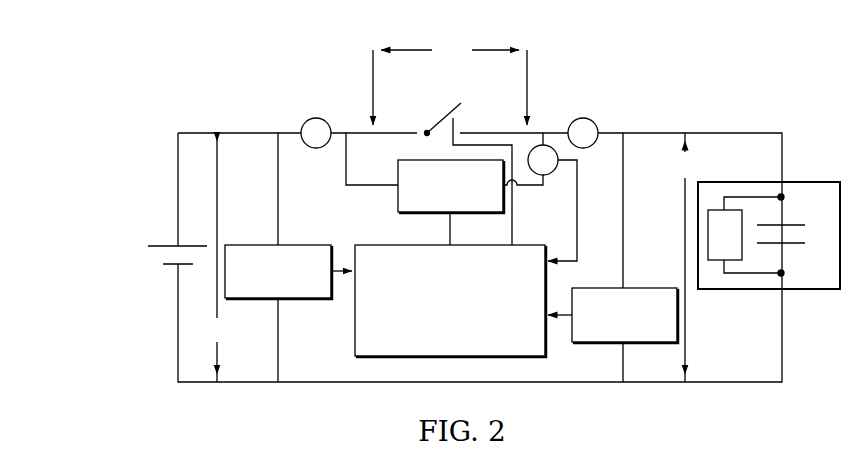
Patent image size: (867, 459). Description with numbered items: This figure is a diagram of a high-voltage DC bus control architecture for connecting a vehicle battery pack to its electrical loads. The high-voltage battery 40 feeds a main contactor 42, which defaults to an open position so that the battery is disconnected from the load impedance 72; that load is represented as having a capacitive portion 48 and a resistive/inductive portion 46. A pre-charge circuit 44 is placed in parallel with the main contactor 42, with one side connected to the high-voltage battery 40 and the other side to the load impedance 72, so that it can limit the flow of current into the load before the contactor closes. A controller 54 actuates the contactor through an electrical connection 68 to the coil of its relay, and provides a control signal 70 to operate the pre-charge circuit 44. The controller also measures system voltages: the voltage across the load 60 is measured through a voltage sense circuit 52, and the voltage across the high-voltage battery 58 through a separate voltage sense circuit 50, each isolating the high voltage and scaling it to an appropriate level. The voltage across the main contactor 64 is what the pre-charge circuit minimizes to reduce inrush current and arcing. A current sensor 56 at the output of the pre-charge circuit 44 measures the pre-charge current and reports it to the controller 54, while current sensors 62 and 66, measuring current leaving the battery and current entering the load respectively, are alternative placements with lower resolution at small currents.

The high-voltage battery 40 is at (163, 245).
The main contactor 42 is at (441, 120).
The pre-charge circuit 44 is at (397, 172).
The resistive/inductive portion 46 is at (746, 235).
The capacitive portion 48 is at (790, 223).
The voltage sense circuit 50 is at (272, 245).
The voltage sense circuit 52 is at (580, 288).
The controller 54 is at (385, 245).
The current sensor 56 is at (553, 172).
The voltage across the high-voltage battery 58 is at (216, 257).
The voltage across the load 60 is at (684, 257).
The current sensor 62 is at (316, 118).
The voltage across the main contactor (Vmc) 64 is at (494, 46).
The current sensor 66 is at (583, 118).
The electrical connection to the contactor coil 68 is at (512, 205).
The control signal 70 is at (450, 238).
The load impedance 72 is at (793, 290).